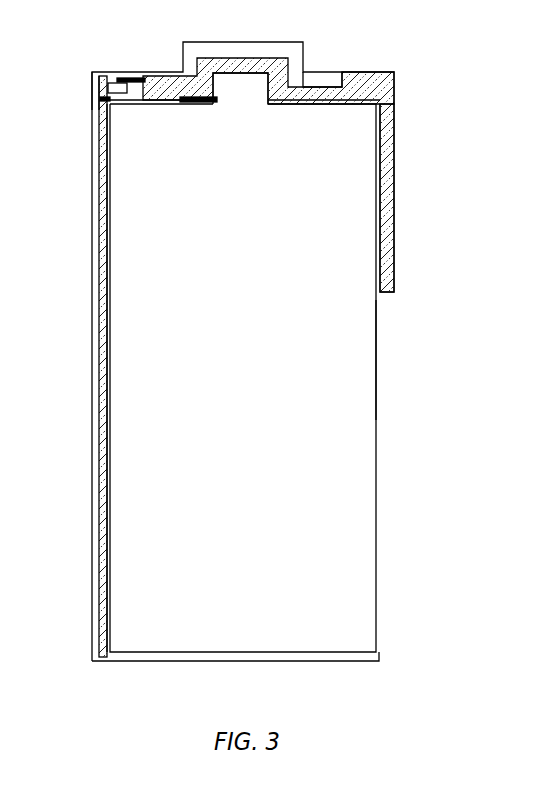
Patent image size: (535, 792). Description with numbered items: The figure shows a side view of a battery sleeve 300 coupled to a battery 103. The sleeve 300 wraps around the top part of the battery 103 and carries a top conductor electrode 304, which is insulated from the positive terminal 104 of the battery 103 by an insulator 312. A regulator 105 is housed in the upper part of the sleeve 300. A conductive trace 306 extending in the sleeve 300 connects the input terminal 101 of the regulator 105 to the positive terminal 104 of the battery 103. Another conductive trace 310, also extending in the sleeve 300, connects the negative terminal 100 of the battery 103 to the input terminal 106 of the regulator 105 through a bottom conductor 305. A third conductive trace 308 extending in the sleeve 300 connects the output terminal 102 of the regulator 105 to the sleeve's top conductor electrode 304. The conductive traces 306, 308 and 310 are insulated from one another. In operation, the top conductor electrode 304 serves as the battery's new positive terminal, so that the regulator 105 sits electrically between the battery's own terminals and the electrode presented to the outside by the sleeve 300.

The negative terminal 100 is at (267, 653).
The input terminal 101 is at (130, 105).
The output terminal 102 is at (117, 78).
The battery 103 is at (375, 363).
The positive terminal 104 is at (242, 85).
The regulator 105 is at (107, 89).
The input terminal 106 is at (97, 103).
The sleeve 300 is at (395, 90).
The top conductor electrode 304 is at (323, 80).
The bottom conductor 305 is at (220, 658).
The conductive trace 306 is at (192, 101).
The conductive trace 308 is at (140, 78).
The conductive trace 310 is at (93, 402).
The insulator 312 is at (387, 175).